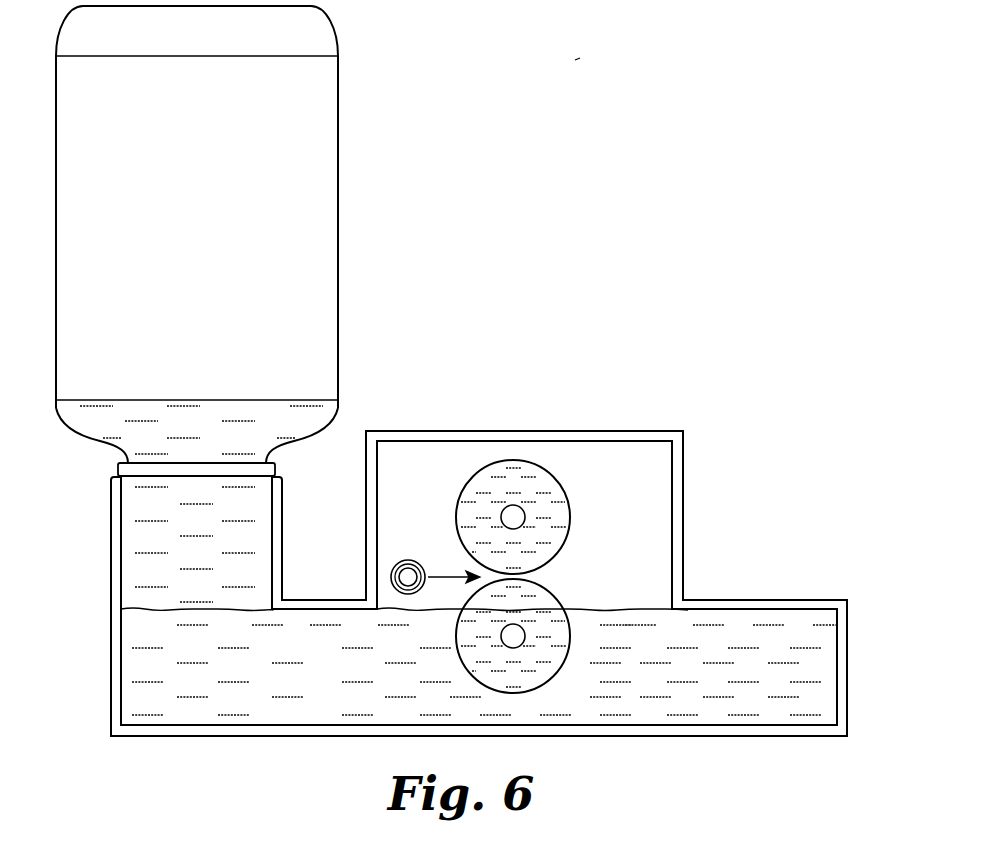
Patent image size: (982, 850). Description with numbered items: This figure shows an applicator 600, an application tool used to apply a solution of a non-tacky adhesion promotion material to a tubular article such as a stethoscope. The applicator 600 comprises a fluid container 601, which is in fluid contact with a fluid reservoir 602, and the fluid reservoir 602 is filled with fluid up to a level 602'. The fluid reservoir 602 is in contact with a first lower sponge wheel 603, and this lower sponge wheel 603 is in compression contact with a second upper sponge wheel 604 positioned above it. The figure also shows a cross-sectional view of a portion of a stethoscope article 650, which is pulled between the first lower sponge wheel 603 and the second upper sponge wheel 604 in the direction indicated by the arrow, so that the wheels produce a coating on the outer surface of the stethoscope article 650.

The applicator 600 is at (580, 58).
The fluid container 601 is at (315, 185).
The fluid reservoir 602 is at (434, 583).
The fluid level 602' is at (702, 588).
The first lower sponge wheel 603 is at (540, 595).
The second upper sponge wheel 604 is at (540, 475).
The stethoscope article 650 is at (403, 562).